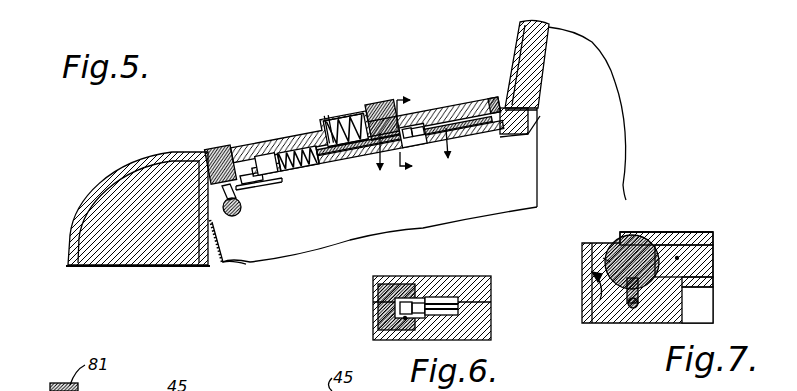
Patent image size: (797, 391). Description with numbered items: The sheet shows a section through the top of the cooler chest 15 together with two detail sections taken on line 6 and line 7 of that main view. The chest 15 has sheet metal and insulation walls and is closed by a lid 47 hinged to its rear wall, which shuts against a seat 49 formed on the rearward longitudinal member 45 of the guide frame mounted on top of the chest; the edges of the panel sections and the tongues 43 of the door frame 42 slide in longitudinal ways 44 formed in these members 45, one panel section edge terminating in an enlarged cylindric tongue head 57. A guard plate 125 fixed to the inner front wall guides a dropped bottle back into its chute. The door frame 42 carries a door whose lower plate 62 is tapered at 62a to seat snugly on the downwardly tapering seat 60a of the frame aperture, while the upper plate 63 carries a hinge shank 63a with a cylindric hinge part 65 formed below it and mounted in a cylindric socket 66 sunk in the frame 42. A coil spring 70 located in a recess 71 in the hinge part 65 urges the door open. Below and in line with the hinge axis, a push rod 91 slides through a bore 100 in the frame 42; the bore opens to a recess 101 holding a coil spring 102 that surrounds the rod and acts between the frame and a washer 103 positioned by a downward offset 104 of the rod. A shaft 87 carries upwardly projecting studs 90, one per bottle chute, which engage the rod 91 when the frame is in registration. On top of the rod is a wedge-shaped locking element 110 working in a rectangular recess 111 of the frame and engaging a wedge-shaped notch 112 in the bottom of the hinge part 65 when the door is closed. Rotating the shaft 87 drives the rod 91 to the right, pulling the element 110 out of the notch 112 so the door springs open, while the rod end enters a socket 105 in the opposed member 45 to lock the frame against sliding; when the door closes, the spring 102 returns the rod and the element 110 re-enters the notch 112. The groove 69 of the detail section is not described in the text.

In FIG. 5, the cooler chest 15 is at (66, 246).
In FIG. 5, the door frame 42 is at (365, 124).
In FIG. 6, the door frame 42 is at (491, 322).
In FIG. 7, the door frame 42 is at (713, 306).
In FIG. 5, the tongues 43 is at (501, 60).
In FIG. 5, the longitudinal ways 44 is at (221, 164).
In FIG. 5, the longitudinal members 45 is at (530, 110).
In FIG. 5, the lid 47 is at (543, 26).
In FIG. 5, the seat 49 is at (528, 100).
In FIG. 7, the tongue head 57 is at (594, 276).
In FIG. 7, the seat 60a is at (713, 281).
In FIG. 7, the lower door plate 62 is at (713, 260).
In FIG. 7, the taper 62a is at (677, 258).
In FIG. 7, the upper door plate 63 is at (707, 234).
In FIG. 7, the shank 63a is at (657, 234).
In FIG. 5, the cylindric hinge part 65 is at (382, 120).
In FIG. 6, the cylindric hinge part 65 is at (405, 300).
In FIG. 7, the cylindric hinge part 65 is at (617, 240).
In FIG. 7, the cylindric socket 66 is at (606, 262).
In FIG. 7, the groove 69 is at (600, 284).
In FIG. 5, the coil spring 70 is at (345, 129).
In FIG. 5, the recess 71 is at (328, 129).
In FIG. 5, the shaft 87 is at (237, 218).
In FIG. 5, the studs 90 is at (222, 187).
In FIG. 5, the push rod 91 is at (405, 136).
In FIG. 6, the push rod 91 is at (445, 305).
In FIG. 7, the push rod 91 is at (633, 308).
In FIG. 5, the bore 100 is at (378, 149).
In FIG. 5, the recess 101 is at (266, 164).
In FIG. 5, the coil spring 102 is at (298, 158).
In FIG. 5, the washer 103 is at (262, 178).
In FIG. 5, the downward offset 104 is at (258, 184).
In FIG. 5, the socket 105 is at (527, 136).
In FIG. 5, the locking element 110 is at (413, 135).
In FIG. 6, the locking element 110 is at (410, 302).
In FIG. 7, the locking element 110 is at (633, 305).
In FIG. 5, the rectangular recess 111 is at (417, 132).
In FIG. 6, the rectangular recess 111 is at (430, 300).
In FIG. 6, the wedge shaped notch 112 is at (405, 318).
In FIG. 5, the guard plate 125 is at (232, 262).
In FIG. 5, the line 6— 6 is at (419, 159).
In FIG. 5, the line 7— 7 is at (411, 133).